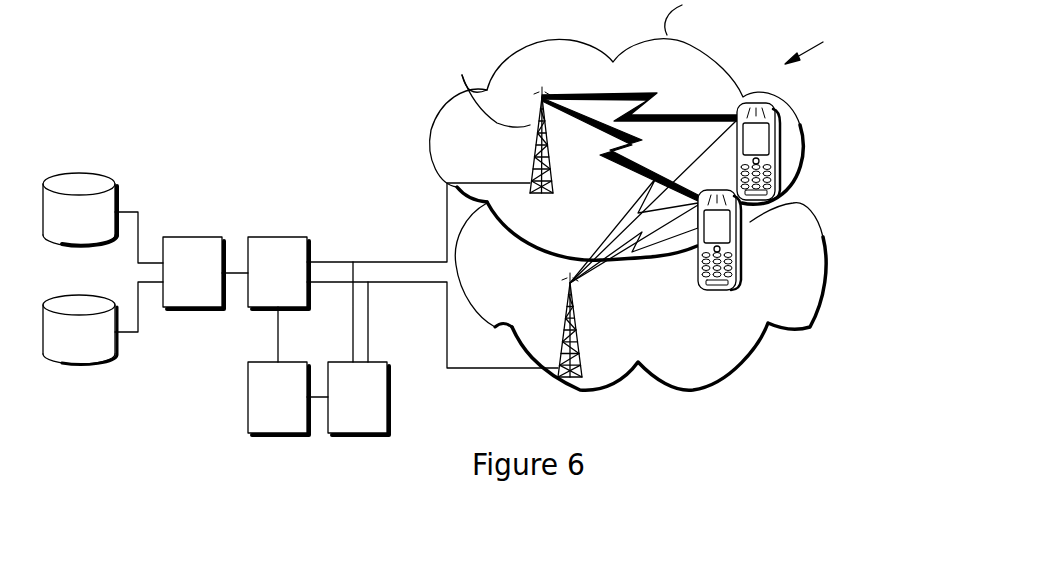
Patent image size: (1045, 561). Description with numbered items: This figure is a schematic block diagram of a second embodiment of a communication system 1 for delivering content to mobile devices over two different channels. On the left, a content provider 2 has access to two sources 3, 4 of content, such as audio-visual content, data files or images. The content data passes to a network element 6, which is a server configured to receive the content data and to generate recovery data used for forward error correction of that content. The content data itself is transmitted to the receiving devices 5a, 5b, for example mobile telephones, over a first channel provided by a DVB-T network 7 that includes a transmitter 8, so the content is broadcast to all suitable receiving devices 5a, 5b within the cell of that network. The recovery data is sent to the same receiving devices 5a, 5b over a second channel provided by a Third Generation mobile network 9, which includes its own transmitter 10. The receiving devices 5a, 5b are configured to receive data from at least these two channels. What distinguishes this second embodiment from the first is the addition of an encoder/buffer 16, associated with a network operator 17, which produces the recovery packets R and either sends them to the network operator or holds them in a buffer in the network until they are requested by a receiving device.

The communication system 1 is at (811, 37).
The content provider 2 is at (195, 237).
The content source 3 is at (80, 209).
The content source 4 is at (80, 330).
The receiving device 5a is at (788, 133).
The receiving device 5b is at (823, 239).
The network element 6 is at (270, 237).
The DVB-T network 7 is at (617, 130).
The transmitter 8 is at (432, 214).
The 3G mobile network 9 is at (810, 327).
The transmitter 10 is at (593, 350).
The encoder/buffer 16 is at (248, 398).
The network operator 17 is at (387, 412).